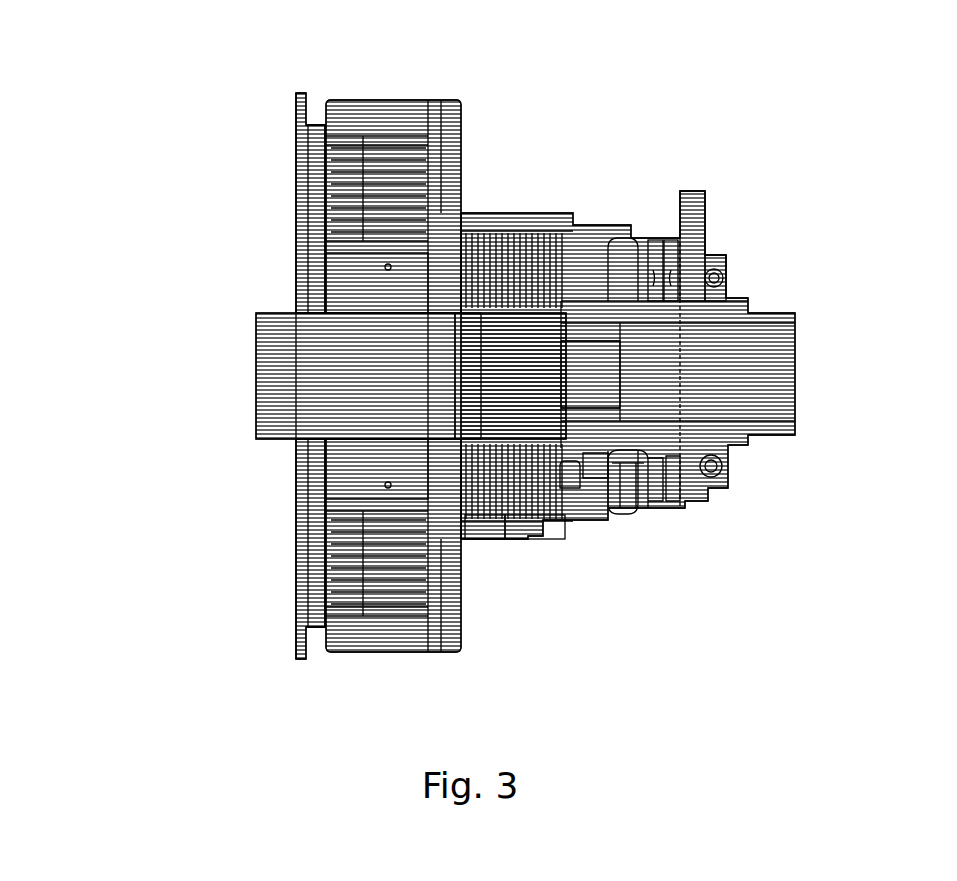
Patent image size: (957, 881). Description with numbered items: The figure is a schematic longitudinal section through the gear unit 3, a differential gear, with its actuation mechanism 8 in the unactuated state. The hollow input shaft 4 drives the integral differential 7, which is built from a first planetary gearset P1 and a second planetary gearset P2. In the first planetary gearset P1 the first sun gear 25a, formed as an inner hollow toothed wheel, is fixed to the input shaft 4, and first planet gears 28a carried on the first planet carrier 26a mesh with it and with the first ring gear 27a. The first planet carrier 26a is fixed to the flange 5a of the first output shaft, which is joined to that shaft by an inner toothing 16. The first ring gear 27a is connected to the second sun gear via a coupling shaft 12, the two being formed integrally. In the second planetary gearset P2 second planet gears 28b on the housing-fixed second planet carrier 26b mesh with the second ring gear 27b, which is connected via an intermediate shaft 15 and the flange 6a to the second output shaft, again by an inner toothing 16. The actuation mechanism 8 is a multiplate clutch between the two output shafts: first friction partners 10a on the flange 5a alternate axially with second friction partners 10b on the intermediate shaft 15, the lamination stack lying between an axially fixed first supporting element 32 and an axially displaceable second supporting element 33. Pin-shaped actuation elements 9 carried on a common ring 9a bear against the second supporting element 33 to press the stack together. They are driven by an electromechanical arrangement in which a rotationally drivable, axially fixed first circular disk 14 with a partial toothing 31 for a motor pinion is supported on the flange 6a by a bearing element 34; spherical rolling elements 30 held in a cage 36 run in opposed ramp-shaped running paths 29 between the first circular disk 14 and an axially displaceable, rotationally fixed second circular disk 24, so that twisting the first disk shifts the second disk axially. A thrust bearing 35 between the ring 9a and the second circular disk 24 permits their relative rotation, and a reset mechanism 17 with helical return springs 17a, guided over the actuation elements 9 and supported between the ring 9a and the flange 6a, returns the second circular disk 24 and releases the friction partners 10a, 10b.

The gear unit 3 is at (272, 655).
The input shaft 4 is at (262, 423).
The flange 5a is at (470, 392).
The flange 6a is at (770, 422).
The integral differential 7 is at (429, 80).
The actuation mechanism 8 is at (722, 148).
The actuation elements 9 is at (562, 463).
The ring 9a is at (620, 493).
The first friction partners 10a is at (484, 240).
The second friction partners 10b is at (520, 235).
The coupling shaft 12 is at (378, 376).
The first circular disk 14 is at (690, 227).
The intermediate shaft 15 is at (455, 107).
The inner toothing 16 is at (585, 390).
The reset mechanism 17 is at (607, 509).
The return springs 17a is at (603, 480).
The second circular disk 24 is at (638, 230).
The first sun gear 25a is at (337, 305).
The first planet carrier 26a is at (313, 237).
The second planet carrier 26b is at (293, 106).
The first ring gear 27a is at (325, 213).
The second ring gear 27b is at (367, 100).
The first planet gears 28a is at (330, 291).
The second planet gears 28b is at (323, 190).
The running paths 29 is at (655, 247).
The rolling elements 30 is at (677, 483).
The toothing 31 is at (680, 183).
The first supporting element 32 is at (468, 507).
The second supporting element 33 is at (548, 512).
The bearing element 34 is at (722, 262).
The thrust bearing 35 is at (641, 507).
The cage 36 is at (663, 493).
The first planetary gearset P1 is at (272, 610).
The second planetary gearset P2 is at (308, 86).